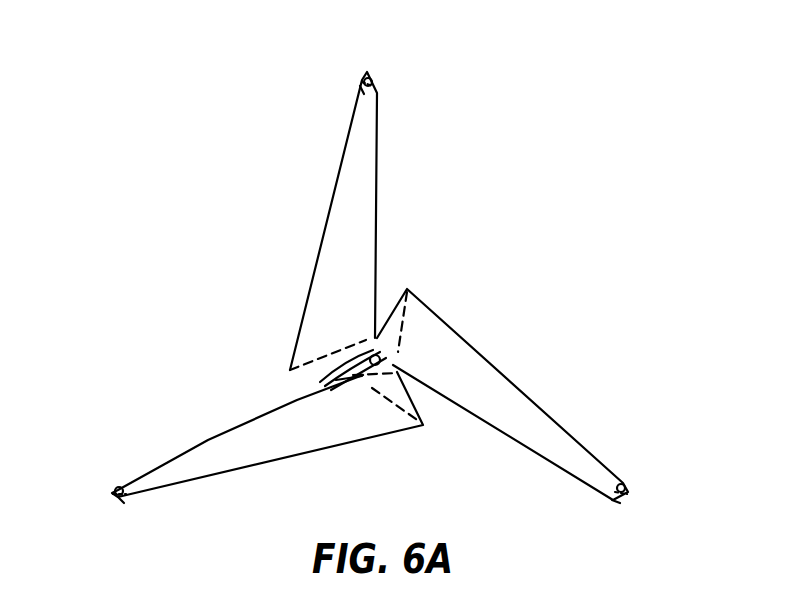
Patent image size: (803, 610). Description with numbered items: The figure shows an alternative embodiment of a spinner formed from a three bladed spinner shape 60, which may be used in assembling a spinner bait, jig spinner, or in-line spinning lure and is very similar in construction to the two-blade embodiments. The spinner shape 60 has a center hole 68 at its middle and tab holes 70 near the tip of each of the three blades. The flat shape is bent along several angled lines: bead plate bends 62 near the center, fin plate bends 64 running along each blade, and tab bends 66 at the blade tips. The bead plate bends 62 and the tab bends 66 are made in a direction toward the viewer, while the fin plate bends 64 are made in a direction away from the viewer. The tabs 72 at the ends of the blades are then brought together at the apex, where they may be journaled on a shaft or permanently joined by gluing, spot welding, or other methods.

The three bladed spinner shape 60 is at (410, 207).
The bead plate bends 62 is at (340, 380).
The fin plate bends 64 is at (297, 367).
The tab bends 66 is at (370, 94).
The center hole 68 is at (381, 360).
The tab holes 70 is at (373, 79).
The tabs 72 is at (365, 80).